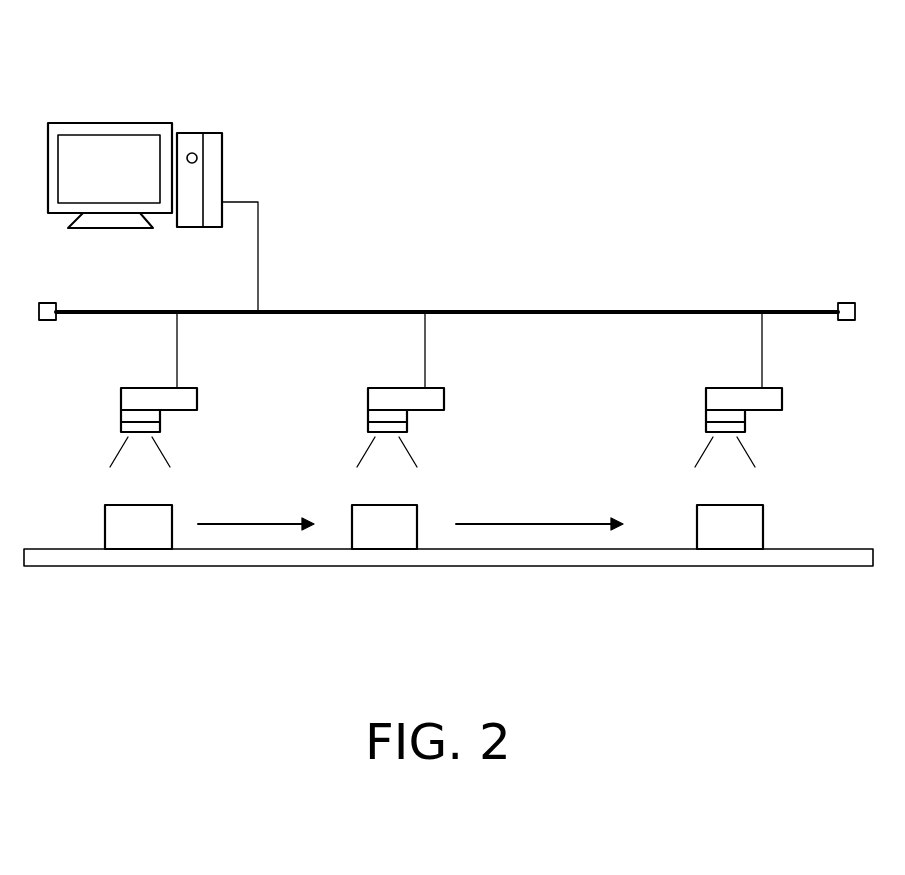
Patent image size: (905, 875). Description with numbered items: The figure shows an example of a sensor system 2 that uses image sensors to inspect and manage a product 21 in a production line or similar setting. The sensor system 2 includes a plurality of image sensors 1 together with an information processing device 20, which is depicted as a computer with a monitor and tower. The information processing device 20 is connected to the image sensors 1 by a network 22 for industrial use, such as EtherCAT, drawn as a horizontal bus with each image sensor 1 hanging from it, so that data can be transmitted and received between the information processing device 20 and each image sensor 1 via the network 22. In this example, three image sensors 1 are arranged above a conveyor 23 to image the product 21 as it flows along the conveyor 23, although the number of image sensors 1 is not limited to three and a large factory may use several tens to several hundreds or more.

The image sensor 1 is at (121, 398).
The sensor system 2 is at (666, 92).
The information processing device 20 is at (193, 133).
The product 21 is at (105, 522).
The network 22 is at (613, 311).
The conveyor 23 is at (228, 567).